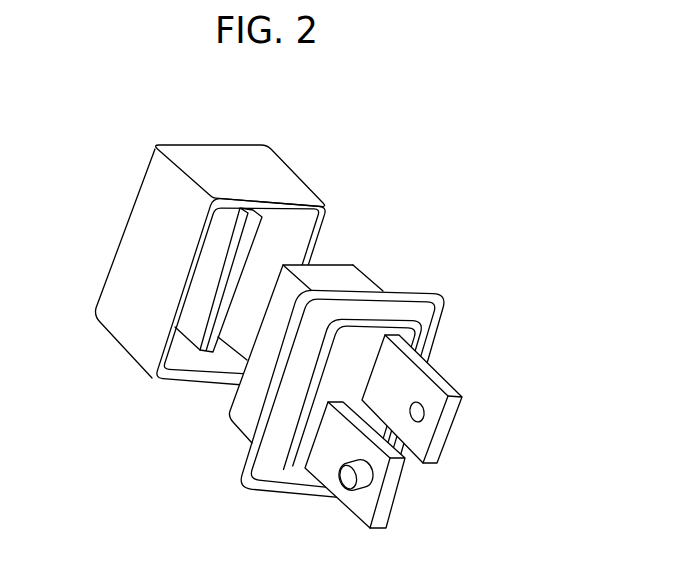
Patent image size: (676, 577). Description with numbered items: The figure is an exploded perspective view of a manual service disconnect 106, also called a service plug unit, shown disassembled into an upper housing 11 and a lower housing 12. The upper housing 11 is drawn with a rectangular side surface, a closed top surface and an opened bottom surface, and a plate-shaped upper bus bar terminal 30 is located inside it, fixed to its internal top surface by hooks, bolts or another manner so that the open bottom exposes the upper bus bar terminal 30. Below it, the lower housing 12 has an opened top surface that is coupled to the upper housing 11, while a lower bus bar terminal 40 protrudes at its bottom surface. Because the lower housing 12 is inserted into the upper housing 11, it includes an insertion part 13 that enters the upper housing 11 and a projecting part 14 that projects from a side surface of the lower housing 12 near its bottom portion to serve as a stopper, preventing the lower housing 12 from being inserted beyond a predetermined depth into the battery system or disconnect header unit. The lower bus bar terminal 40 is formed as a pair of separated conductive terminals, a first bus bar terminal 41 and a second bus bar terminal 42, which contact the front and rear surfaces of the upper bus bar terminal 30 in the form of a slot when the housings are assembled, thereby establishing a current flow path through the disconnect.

The manual service disconnect 106 is at (412, 165).
The upper housing 11 is at (199, 233).
The lower housing 12 is at (319, 389).
The insertion part 13 is at (231, 428).
The projecting part 14 is at (249, 469).
The upper bus bar terminal 30 is at (232, 255).
The lower bus bar terminal 40 is at (426, 431).
The first bus bar terminal 41 is at (391, 504).
The second bus bar terminal 42 is at (445, 428).